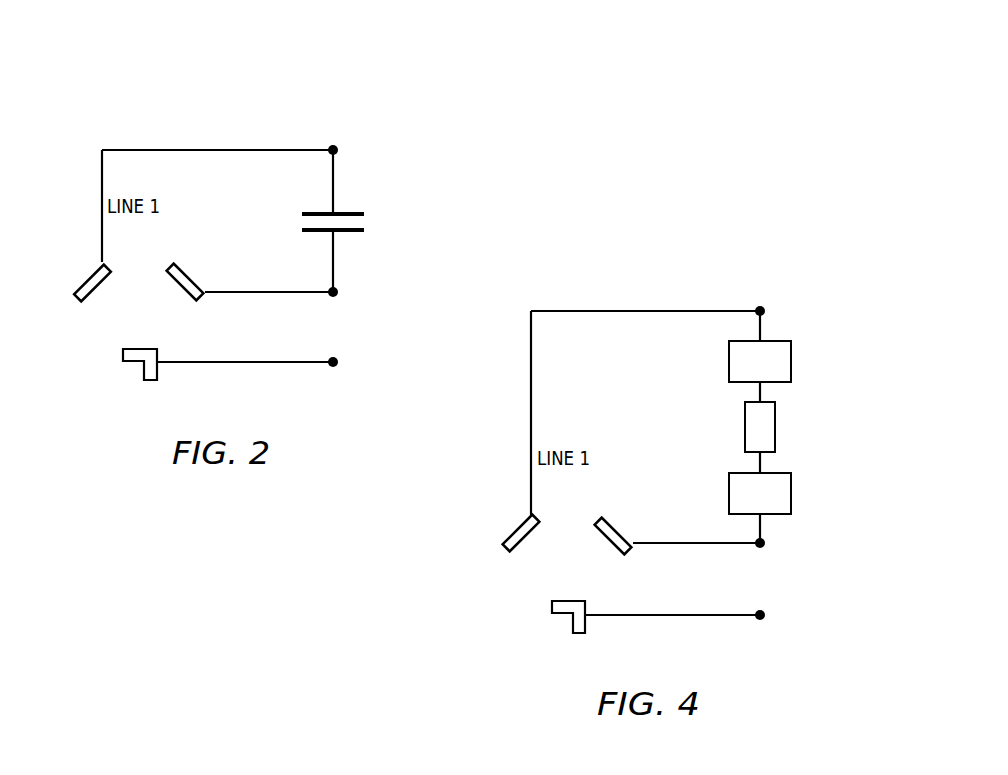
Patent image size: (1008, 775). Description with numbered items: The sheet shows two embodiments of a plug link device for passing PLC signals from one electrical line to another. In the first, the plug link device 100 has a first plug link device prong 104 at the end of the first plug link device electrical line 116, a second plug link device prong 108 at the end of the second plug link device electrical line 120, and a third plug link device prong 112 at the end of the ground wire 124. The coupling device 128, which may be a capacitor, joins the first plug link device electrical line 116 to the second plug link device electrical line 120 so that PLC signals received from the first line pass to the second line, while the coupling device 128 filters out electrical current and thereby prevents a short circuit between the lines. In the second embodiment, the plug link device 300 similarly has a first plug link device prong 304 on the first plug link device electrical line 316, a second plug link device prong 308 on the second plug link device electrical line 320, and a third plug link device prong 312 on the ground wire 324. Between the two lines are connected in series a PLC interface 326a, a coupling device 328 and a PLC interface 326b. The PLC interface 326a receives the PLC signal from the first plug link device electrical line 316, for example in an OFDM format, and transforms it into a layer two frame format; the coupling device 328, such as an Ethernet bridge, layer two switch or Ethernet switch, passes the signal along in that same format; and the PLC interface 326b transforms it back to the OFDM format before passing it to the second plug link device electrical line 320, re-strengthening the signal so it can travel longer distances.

In FIG. 2, the plug link device 100 is at (153, 116).
In FIG. 2, the first plug link device prong 104 is at (87, 273).
In FIG. 2, the second plug link device prong 108 is at (178, 285).
In FIG. 2, the third plug link device prong 112 is at (137, 364).
In FIG. 2, the first plug link device electrical line 116 is at (216, 149).
In FIG. 2, the second plug link device electrical line 120 is at (297, 294).
In FIG. 2, the ground wire 124 is at (247, 364).
In FIG. 2, the coupling device 128 is at (345, 211).
In FIG. 4, the plug link device 300 is at (704, 277).
In FIG. 4, the first plug link device prong 304 is at (517, 528).
In FIG. 4, the second plug link device prong 308 is at (608, 537).
In FIG. 4, the third plug link device prong 312 is at (562, 616).
In FIG. 4, the first plug link device electrical line 316 is at (628, 309).
In FIG. 4, the second plug link device electrical line 320 is at (725, 545).
In FIG. 4, the ground wire 324 is at (675, 618).
In FIG. 4, the PLC interface 326a is at (792, 360).
In FIG. 4, the PLC interface 326b is at (792, 493).
In FIG. 4, the coupling device 328 is at (777, 427).